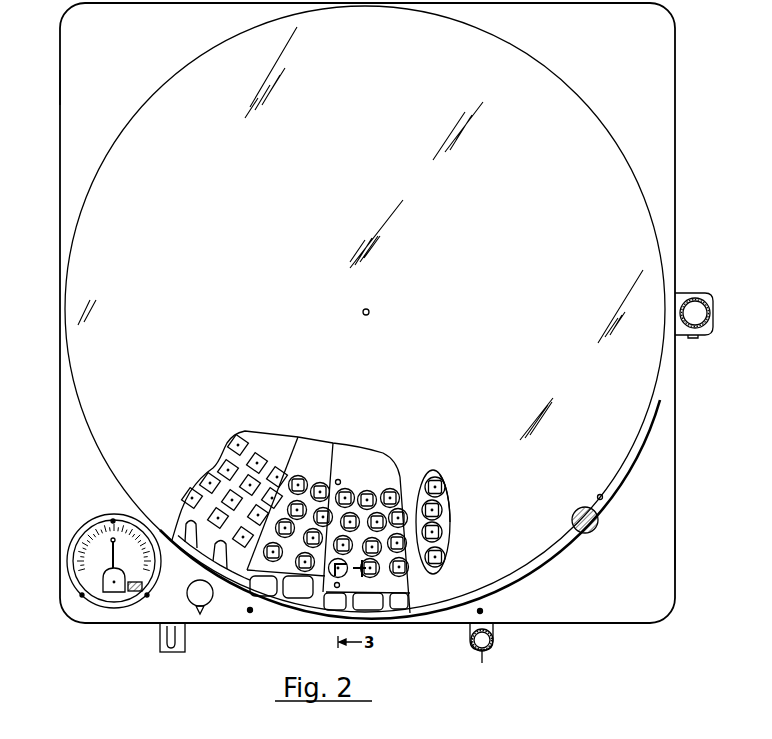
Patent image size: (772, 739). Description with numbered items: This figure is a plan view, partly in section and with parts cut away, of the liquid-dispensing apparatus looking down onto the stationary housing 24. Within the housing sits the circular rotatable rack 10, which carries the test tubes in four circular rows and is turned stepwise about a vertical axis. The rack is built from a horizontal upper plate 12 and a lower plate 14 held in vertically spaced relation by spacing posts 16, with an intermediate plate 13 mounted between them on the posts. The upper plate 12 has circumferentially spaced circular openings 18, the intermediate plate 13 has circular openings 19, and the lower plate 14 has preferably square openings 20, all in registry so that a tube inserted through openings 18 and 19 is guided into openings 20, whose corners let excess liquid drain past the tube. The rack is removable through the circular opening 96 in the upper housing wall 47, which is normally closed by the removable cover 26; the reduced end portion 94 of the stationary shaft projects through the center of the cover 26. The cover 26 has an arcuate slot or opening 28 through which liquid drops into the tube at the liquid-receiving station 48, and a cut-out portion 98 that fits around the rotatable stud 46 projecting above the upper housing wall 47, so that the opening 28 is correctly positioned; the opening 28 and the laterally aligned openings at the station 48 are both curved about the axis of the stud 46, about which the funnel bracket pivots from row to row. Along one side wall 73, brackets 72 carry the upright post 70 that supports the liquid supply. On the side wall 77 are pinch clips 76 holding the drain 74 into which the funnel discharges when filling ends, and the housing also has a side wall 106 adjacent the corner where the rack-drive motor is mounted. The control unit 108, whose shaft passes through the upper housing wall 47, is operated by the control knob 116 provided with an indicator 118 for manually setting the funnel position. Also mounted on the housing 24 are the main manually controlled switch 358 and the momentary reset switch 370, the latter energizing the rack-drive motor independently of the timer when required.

The rotatable rack 10 is at (325, 517).
The upper plate 12 is at (390, 471).
The intermediate plate 13 is at (322, 445).
The lower plate 14 is at (285, 438).
The spacing posts 16 is at (339, 479).
The circular openings 18 is at (396, 496).
The circular openings 19 is at (322, 487).
The openings 20 is at (279, 470).
The stationary housing 24 is at (678, 422).
The removable cover 26 is at (626, 458).
The slot or opening 28 is at (449, 485).
The rotatable support or stud 46 is at (586, 534).
The upper housing wall 47 is at (668, 553).
The liquid-receiving station 48 is at (438, 472).
The upright post 70 is at (705, 305).
The brackets 72 is at (710, 321).
The side wall 73 is at (677, 356).
The drain 74 is at (482, 652).
The pinch clips 76 is at (472, 650).
The side wall 77 is at (574, 622).
The reduced end portion 94 is at (369, 309).
The circular opening 96 is at (266, 596).
The cut-out portion 98 is at (597, 502).
The side wall 106 is at (60, 87).
The control unit 108 is at (201, 599).
The control knob 116 is at (213, 598).
The indicator 118 is at (205, 610).
The main manually controlled switch 358 is at (168, 637).
The momentary reset switch 370 is at (180, 651).